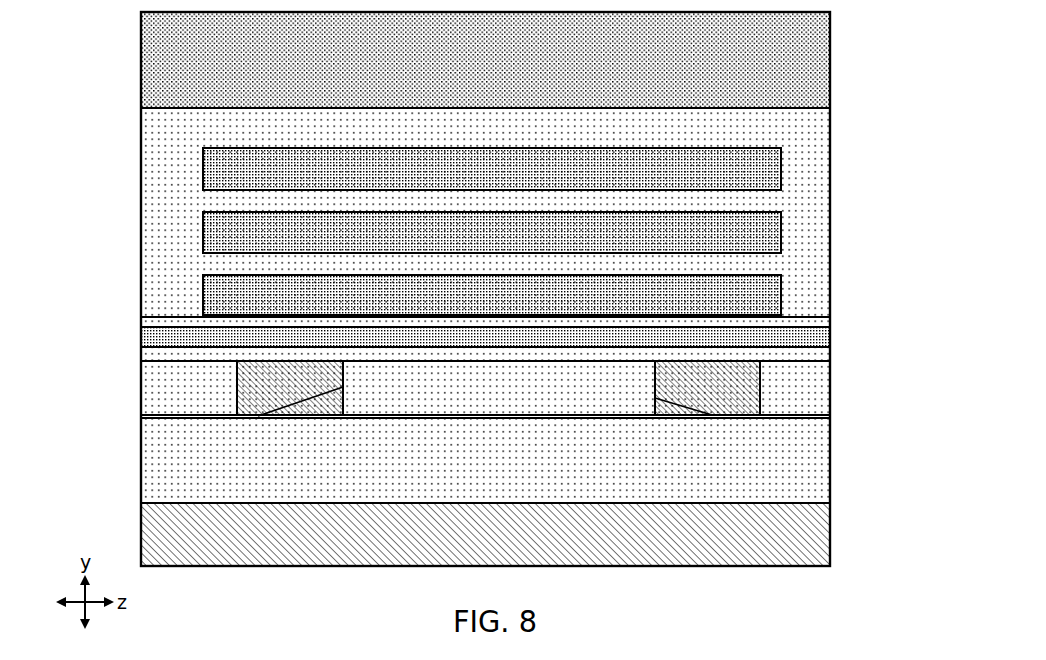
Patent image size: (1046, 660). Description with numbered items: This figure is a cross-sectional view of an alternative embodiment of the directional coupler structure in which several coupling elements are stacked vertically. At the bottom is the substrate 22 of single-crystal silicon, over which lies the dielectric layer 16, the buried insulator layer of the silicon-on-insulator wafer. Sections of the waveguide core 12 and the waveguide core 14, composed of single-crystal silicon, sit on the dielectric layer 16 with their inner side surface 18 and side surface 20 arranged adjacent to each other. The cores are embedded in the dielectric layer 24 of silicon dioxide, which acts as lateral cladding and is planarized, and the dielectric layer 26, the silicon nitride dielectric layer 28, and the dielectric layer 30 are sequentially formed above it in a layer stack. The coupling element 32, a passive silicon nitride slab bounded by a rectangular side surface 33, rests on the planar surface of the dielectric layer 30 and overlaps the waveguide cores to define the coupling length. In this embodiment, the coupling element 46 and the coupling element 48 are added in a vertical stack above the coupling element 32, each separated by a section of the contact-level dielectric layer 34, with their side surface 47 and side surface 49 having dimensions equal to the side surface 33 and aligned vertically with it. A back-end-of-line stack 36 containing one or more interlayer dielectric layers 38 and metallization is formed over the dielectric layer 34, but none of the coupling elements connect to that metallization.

The back-end-of-line stack 36 is at (840, 66).
The interlayer dielectric layer 38 is at (170, 73).
The dielectric layer 34 is at (170, 135).
The coupling element 48 is at (747, 170).
The side surface 49 is at (203, 172).
The coupling element 46 is at (750, 232).
The side surface 47 is at (203, 232).
The coupling element 32 is at (737, 298).
The side surface 33 is at (203, 297).
The dielectric layer 30 is at (196, 323).
The dielectric layer 28 is at (740, 342).
The dielectric layer 26 is at (236, 357).
The dielectric layer 24 is at (807, 388).
The waveguide core 12 is at (262, 385).
The waveguide core 14 is at (728, 388).
The side surface 18 is at (258, 416).
The side surface 20 is at (712, 415).
The dielectric layer 16 is at (810, 472).
The substrate 22 is at (810, 532).